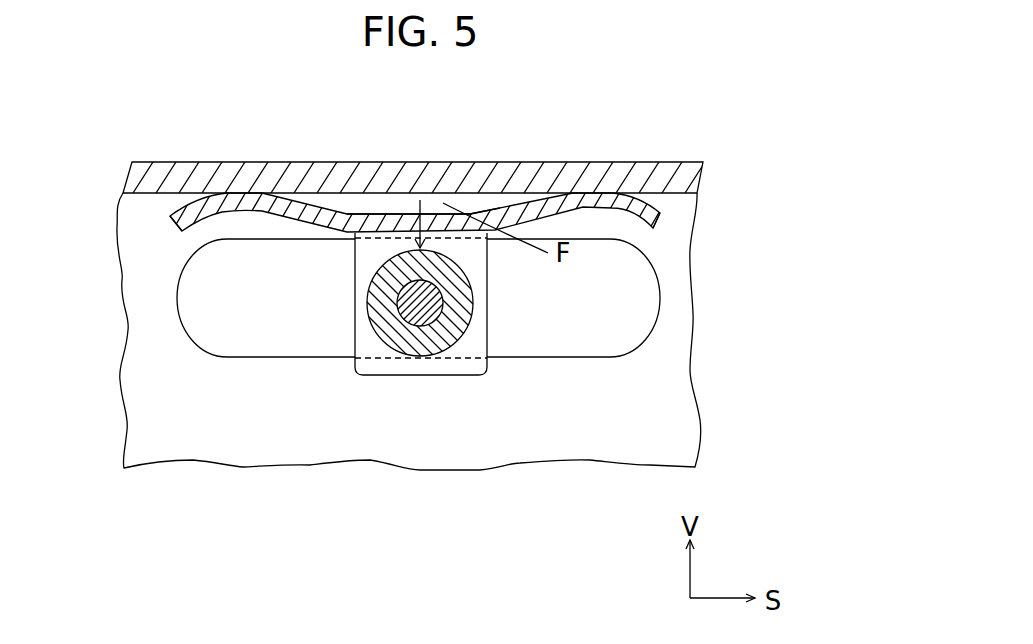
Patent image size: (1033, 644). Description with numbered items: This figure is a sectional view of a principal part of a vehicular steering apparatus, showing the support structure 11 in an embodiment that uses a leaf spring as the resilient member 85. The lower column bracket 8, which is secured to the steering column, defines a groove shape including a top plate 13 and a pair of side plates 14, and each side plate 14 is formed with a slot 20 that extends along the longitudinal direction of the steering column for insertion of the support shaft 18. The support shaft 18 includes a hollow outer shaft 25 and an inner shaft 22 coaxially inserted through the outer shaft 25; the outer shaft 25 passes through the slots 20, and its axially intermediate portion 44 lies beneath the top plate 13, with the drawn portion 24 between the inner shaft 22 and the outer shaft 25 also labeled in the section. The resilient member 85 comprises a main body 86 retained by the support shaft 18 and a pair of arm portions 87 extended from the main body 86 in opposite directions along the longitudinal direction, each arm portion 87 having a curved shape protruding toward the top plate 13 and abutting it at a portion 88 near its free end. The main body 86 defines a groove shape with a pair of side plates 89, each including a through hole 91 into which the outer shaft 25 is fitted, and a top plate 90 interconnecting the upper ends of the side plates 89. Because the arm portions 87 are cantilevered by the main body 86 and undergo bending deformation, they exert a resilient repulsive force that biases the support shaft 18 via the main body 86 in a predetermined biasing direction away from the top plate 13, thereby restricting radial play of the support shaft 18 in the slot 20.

The support structure 11 is at (445, 269).
The top plate 13 is at (658, 168).
The lower column bracket 8 is at (448, 331).
The side plates 14 is at (692, 313).
The resilient member 85 is at (418, 385).
The slot 20 is at (560, 352).
The side plates 89 is at (355, 258).
The arm portions 87 is at (412, 203).
The spring end portion 88 is at (240, 200).
The main body 86 is at (383, 212).
The top plate 90 is at (467, 222).
The through hole 91 is at (380, 288).
The support shaft 18 is at (418, 404).
The outer shaft 25 is at (438, 332).
The inner shaft 22 is at (419, 316).
The sheath 24 is at (418, 316).
The axially intermediate portion 44 is at (392, 328).